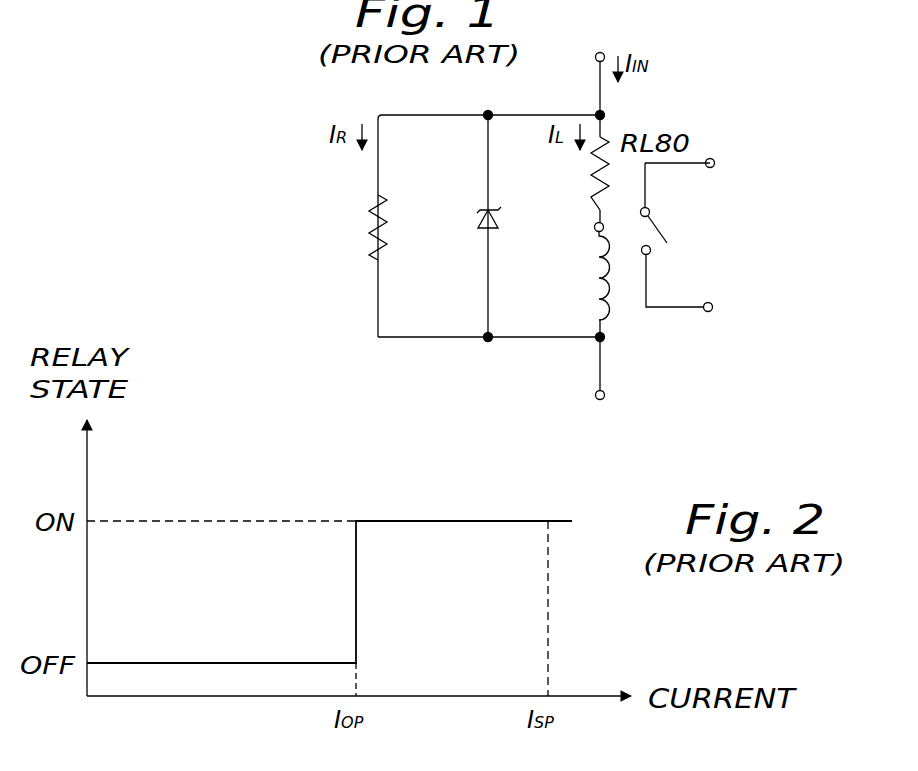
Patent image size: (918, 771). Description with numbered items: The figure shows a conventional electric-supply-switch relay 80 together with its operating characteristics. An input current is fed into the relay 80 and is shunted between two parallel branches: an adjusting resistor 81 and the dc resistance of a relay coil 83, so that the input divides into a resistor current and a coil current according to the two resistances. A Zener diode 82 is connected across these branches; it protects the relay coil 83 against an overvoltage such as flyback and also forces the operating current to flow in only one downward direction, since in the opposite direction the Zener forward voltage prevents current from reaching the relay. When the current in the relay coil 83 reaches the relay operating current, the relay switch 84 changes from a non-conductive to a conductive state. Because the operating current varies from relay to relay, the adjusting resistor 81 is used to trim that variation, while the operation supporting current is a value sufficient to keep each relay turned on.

The electric-supply-switch relay 80 is at (740, 108).
The resistor 81 is at (376, 232).
The Zener diode 82 is at (486, 231).
The relay coil 83 is at (598, 301).
The relay switch SW80 84 is at (660, 237).